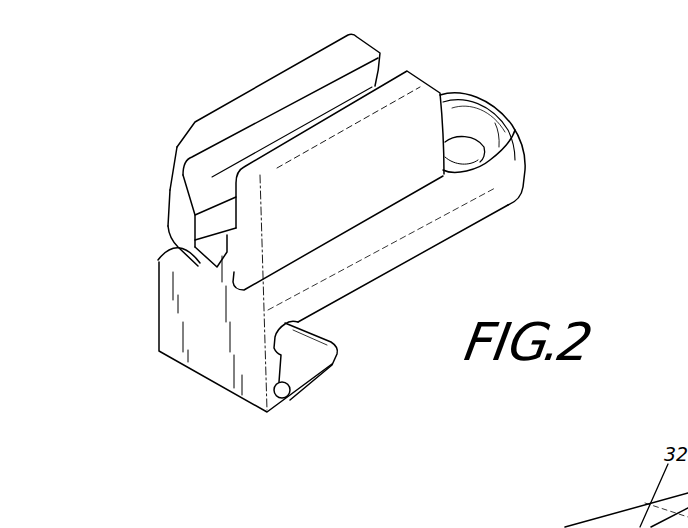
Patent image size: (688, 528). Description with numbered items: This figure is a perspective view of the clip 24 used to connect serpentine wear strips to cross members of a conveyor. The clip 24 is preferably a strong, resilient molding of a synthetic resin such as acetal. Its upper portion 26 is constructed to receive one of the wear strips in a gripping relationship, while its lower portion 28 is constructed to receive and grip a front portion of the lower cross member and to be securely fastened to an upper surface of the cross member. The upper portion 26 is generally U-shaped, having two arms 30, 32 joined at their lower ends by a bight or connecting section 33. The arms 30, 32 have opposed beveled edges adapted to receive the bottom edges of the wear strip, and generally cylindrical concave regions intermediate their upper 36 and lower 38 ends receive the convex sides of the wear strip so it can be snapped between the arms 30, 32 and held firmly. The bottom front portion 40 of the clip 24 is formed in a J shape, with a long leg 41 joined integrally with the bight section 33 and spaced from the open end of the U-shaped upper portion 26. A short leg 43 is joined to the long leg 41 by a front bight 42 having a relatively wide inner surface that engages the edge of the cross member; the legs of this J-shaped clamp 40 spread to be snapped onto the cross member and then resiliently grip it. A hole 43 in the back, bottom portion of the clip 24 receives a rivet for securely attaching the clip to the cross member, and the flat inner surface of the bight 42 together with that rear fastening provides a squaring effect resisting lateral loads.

The clip 24 is at (210, 66).
The upper portion 26 is at (158, 195).
The lower portion 28 is at (560, 232).
The arm 30 is at (335, 62).
The arm 32 is at (425, 102).
The bight or connecting section 33 is at (158, 262).
The upper end 36 is at (168, 146).
The lower end 38 is at (160, 235).
The bottom front portion 40 is at (305, 413).
The long leg 41 is at (410, 258).
The front bight 42 is at (212, 358).
The short leg / hole 43 is at (496, 127).